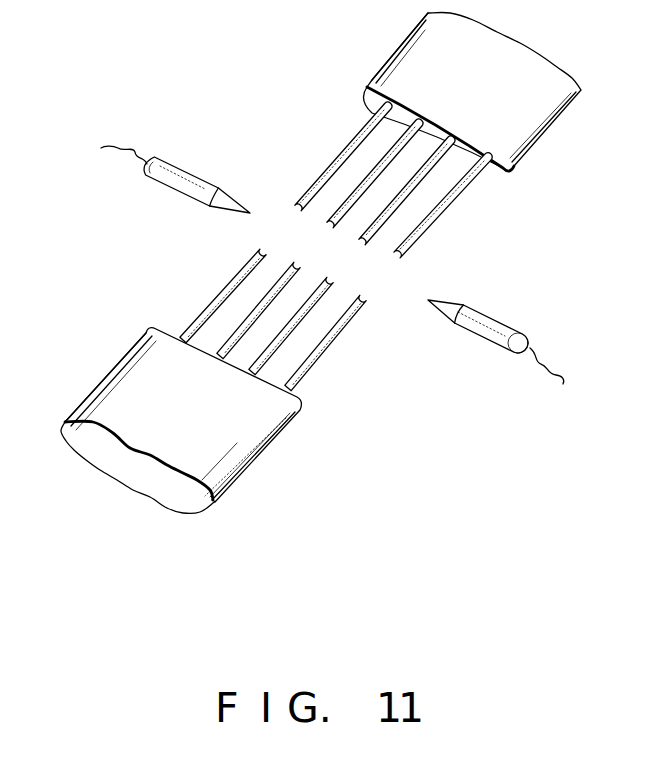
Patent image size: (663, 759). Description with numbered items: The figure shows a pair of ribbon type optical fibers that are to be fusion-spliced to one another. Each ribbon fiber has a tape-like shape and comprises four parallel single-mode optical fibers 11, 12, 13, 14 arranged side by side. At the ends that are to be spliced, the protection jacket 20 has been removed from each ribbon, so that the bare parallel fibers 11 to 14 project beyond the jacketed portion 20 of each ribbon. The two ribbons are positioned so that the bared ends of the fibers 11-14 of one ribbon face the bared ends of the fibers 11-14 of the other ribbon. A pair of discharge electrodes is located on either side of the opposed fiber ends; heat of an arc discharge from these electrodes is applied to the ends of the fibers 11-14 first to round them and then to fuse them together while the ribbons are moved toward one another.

The single-mode optical fiber 11 is at (334, 163).
The single-mode optical fiber 12 is at (329, 212).
The single-mode optical fiber 13 is at (363, 241).
The single-mode optical fiber 14 is at (443, 218).
The protection jacket 20 is at (106, 397).